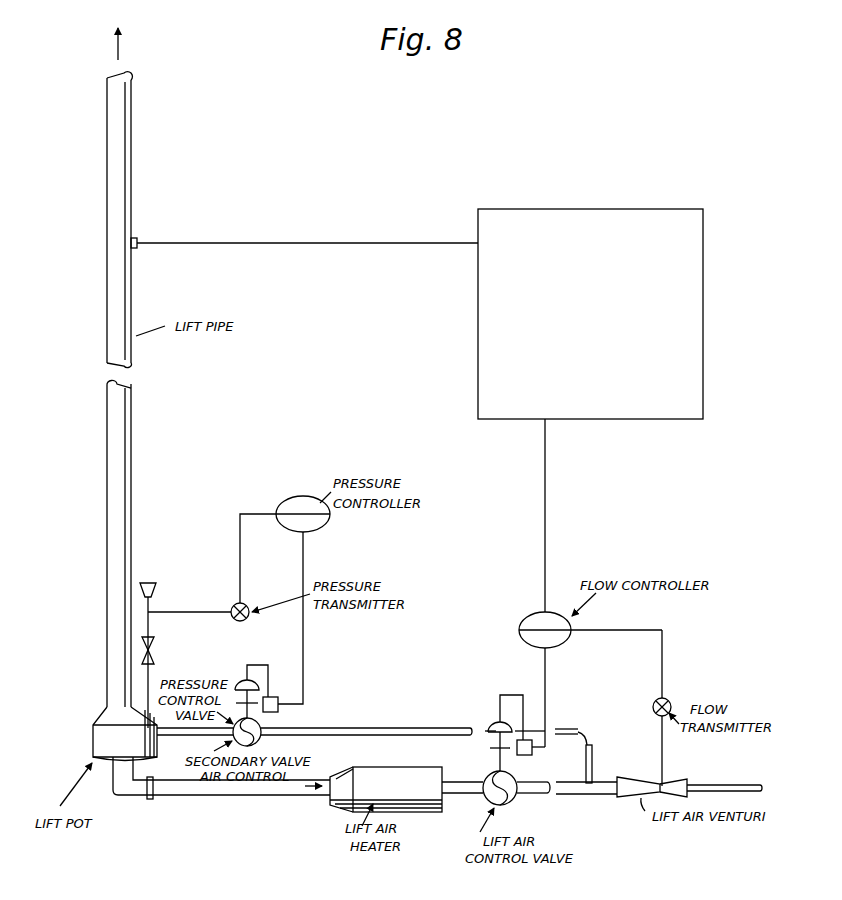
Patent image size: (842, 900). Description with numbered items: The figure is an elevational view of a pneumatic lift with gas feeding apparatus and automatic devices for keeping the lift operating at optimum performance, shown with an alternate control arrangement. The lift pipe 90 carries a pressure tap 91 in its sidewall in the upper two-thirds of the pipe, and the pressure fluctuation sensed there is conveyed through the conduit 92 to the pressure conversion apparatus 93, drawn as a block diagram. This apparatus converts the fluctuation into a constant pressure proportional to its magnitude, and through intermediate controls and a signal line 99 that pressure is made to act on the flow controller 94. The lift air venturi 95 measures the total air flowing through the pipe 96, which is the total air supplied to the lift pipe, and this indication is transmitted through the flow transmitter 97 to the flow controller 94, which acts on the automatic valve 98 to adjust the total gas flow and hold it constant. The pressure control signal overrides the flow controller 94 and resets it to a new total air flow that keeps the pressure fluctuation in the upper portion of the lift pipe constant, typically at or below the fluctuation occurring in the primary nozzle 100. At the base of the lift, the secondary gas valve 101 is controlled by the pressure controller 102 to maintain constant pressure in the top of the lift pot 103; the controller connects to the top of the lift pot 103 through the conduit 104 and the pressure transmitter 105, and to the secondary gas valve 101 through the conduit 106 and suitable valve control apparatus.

The lift pipe 90 is at (132, 437).
The pressure tap 91 is at (137, 238).
The conduit 92 is at (273, 243).
The pressure conversion apparatus 93 is at (690, 333).
The flow controller 94 is at (527, 614).
The lift air venturi 95 is at (675, 782).
The pipe 96 is at (745, 782).
The flow transmitter 97 is at (652, 705).
The automatic valve 98 is at (485, 798).
The signal line 99 is at (548, 497).
The primary nozzle 100 is at (150, 800).
The secondary gas valve 101 is at (262, 726).
The pressure controller 102 is at (292, 496).
The lift pot 103 is at (92, 737).
The conduit 104 is at (171, 607).
The pressure transmitter 105 is at (232, 619).
The conduit 106 is at (305, 646).